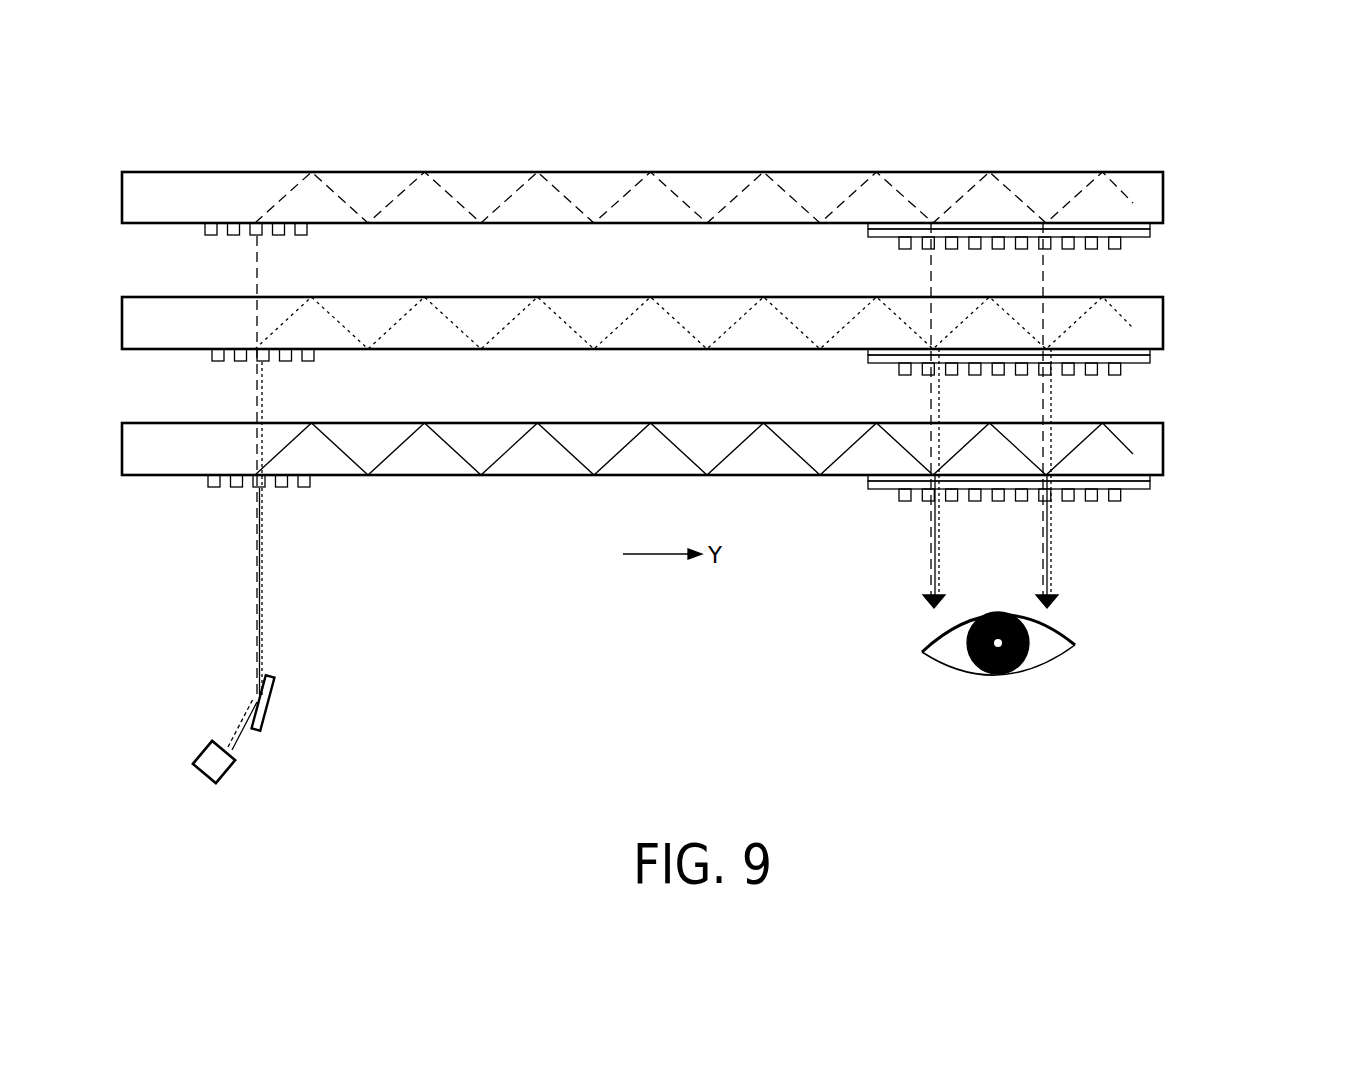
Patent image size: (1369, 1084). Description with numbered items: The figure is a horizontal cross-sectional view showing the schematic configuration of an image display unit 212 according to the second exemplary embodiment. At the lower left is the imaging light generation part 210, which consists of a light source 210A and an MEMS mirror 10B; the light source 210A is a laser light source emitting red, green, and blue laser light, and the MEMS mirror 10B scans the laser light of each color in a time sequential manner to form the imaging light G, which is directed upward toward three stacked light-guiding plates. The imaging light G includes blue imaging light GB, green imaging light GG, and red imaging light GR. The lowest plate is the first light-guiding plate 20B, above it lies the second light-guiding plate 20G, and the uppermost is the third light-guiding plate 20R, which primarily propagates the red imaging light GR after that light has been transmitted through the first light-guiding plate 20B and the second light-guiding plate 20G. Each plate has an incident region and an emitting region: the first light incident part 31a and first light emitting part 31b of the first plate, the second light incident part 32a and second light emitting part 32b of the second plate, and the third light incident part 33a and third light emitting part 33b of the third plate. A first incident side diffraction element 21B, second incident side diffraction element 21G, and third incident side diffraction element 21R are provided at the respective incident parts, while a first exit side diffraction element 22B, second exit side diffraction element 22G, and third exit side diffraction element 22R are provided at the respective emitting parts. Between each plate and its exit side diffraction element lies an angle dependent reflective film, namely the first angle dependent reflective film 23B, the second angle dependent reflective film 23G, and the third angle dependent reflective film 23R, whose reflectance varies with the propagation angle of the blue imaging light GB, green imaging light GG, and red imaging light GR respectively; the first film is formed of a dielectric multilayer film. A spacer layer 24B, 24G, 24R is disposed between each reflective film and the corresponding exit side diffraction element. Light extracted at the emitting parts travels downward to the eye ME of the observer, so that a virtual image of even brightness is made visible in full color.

The image display unit 212 is at (1235, 135).
The third light-guiding plate 20R is at (1180, 192).
The second light-guiding plate 20G is at (1180, 327).
The first light-guiding plate 20B is at (1180, 447).
The third incident side diffraction element 21R is at (203, 231).
The second incident side diffraction element 21G is at (210, 356).
The first incident side diffraction element 21B is at (206, 481).
The third exit side diffraction element 22R is at (1117, 243).
The second exit side diffraction element 22G is at (1117, 370).
The first exit side diffraction element 22B is at (1117, 496).
The third angle dependent reflective film 23R is at (870, 224).
The second angle dependent reflective film 23G is at (870, 350).
The first angle dependent reflective film 23B is at (870, 476).
The spacer layer 24R is at (882, 233).
The spacer layer 24G is at (882, 359).
The spacer layer 24B is at (882, 485).
The third light incident part 33a is at (176, 250).
The third light emitting part 33b is at (1136, 262).
The second light incident part 32a is at (176, 375).
The second light emitting part 32b is at (1136, 378).
The first light incident part 31a is at (176, 500).
The first light emitting part 31b is at (1136, 505).
The imaging light G is at (385, 622).
The red imaging light GR is at (263, 658).
The green imaging light GG is at (263, 645).
The blue imaging light GB is at (263, 632).
The imaging light generation part 210 is at (388, 717).
The MEMS mirror 10B is at (272, 708).
The light source 210A is at (236, 774).
The eye ME is at (1050, 653).